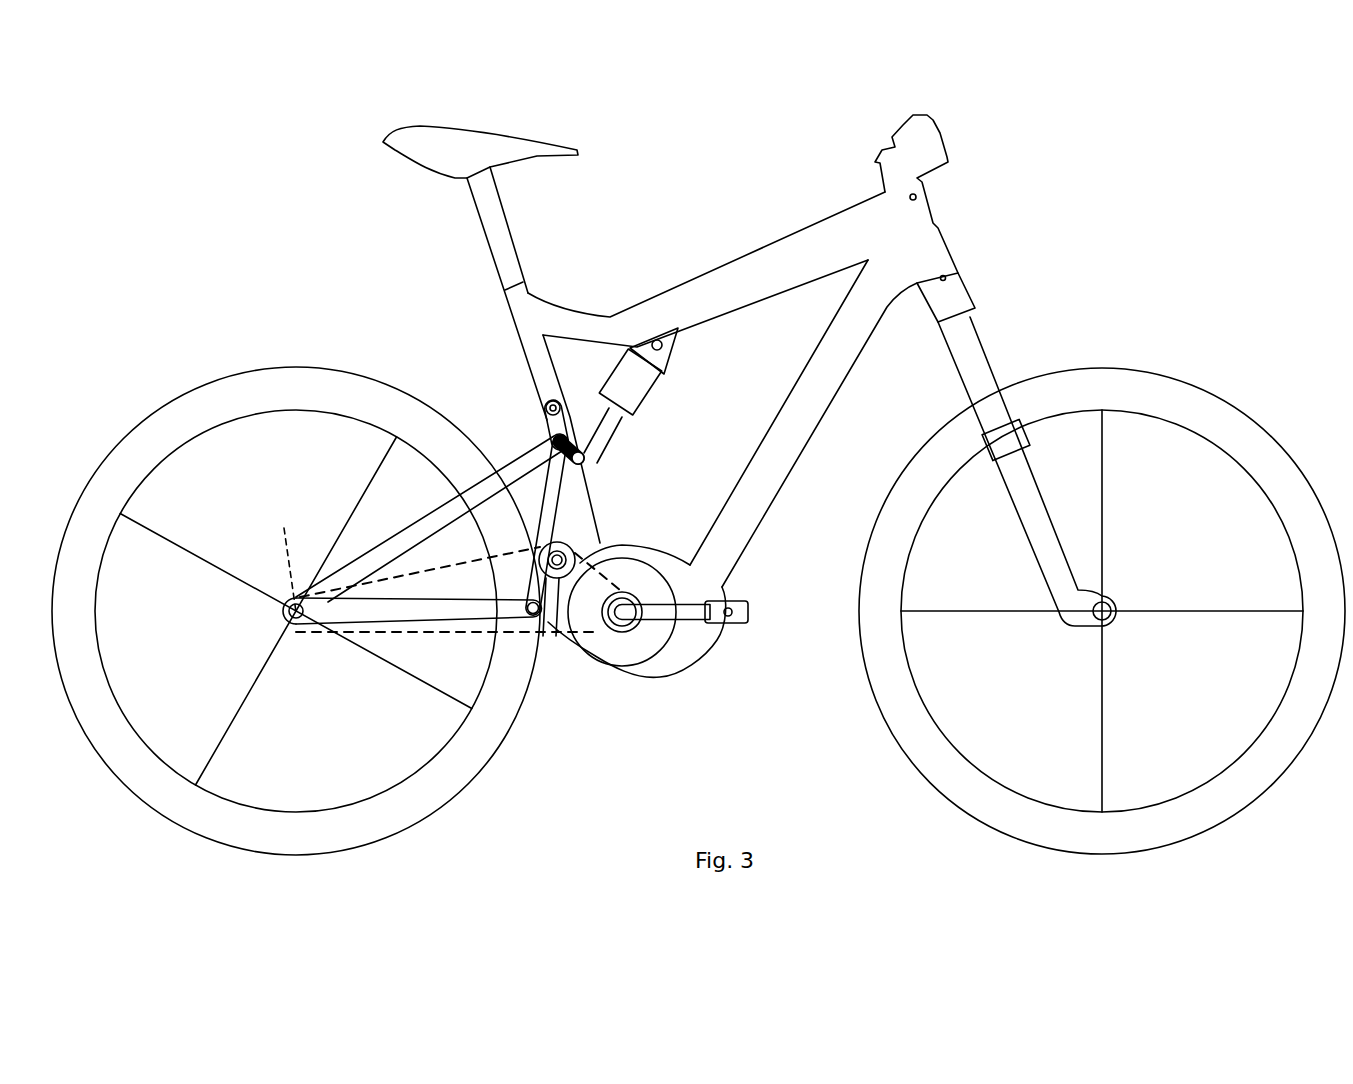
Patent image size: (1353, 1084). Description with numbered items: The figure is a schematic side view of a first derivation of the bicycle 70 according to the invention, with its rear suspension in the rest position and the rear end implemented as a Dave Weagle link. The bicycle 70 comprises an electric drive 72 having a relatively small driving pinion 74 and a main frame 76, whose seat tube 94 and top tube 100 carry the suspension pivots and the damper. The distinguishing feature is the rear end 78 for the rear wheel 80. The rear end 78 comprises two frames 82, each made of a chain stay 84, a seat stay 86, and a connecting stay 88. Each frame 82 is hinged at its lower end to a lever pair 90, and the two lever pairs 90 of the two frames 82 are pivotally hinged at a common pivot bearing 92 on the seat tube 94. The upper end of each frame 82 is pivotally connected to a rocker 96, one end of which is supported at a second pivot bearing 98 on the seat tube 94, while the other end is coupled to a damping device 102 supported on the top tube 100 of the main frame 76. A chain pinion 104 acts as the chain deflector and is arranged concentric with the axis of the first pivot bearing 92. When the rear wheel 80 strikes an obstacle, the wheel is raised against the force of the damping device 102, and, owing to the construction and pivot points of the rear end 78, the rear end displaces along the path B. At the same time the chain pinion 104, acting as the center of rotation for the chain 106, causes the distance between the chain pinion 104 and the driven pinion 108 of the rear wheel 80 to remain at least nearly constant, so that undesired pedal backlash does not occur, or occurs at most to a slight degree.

The bicycle 70 is at (698, 485).
The electric drive 72 is at (638, 638).
The driving pinion 74 is at (633, 594).
The main frame 76 is at (749, 370).
The rear end 78 is at (474, 520).
The rear wheel 80 is at (172, 393).
The frame 82 is at (360, 540).
The chain stay 84 is at (347, 622).
The seat stay 86 is at (348, 574).
The connecting stay 88 is at (552, 492).
The lever pair 90 is at (550, 585).
The pivot bearing 92 is at (535, 562).
The seat tube 94 is at (518, 310).
The rocker 96 is at (520, 402).
The second pivot bearing 98 is at (546, 402).
The top tube 100 is at (775, 258).
The damping device 102 is at (665, 376).
The chain pinion 104 is at (572, 552).
The chain 106 is at (590, 650).
The driven pinion 108 is at (283, 617).
The path B is at (282, 544).